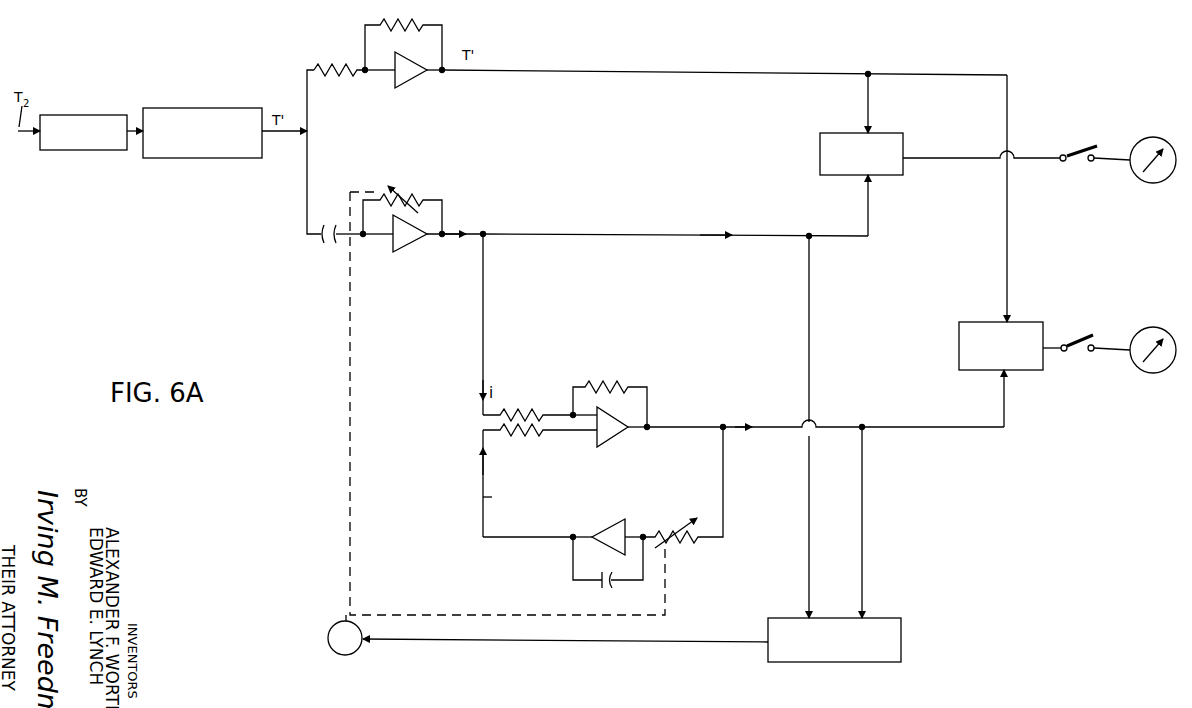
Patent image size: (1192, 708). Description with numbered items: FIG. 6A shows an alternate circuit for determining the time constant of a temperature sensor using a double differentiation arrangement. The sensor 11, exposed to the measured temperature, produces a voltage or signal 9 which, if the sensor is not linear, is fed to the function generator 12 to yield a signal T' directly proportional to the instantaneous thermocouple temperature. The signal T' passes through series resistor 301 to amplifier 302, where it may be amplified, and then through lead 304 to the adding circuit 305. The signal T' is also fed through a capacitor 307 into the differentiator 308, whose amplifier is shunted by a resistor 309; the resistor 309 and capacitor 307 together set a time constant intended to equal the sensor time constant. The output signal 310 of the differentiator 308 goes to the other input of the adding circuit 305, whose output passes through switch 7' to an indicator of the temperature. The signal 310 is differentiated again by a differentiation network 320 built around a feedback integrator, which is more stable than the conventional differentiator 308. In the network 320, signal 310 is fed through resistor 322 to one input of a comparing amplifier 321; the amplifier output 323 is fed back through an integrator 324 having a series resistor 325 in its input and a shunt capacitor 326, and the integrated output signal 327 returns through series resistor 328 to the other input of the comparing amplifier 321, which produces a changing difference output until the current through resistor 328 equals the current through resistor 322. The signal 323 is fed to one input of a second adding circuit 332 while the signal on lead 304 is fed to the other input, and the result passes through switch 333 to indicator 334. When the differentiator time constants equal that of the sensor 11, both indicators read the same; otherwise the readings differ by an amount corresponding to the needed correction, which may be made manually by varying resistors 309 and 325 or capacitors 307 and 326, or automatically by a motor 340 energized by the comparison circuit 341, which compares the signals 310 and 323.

The sensor 11 is at (85, 114).
The signal 9 is at (131, 128).
The function generator 12 is at (225, 108).
The series resistor 301 is at (340, 65).
The amplifier 302 is at (449, 110).
The lead 304 is at (670, 71).
The adding circuit 305 is at (903, 140).
The switch 7' is at (1078, 142).
The capacitor 307 is at (324, 223).
The differentiator 308 is at (405, 249).
The resistor 309 is at (411, 195).
The output signal 310 is at (596, 222).
The differentiation network 320 is at (603, 499).
The comparing amplifier 321 is at (628, 437).
The resistor 322 is at (528, 403).
The output 323 is at (707, 415).
The integrator 324 is at (627, 521).
The series resistor 325 is at (683, 502).
The capacitor 326 is at (613, 585).
The output integrated signal 327 is at (505, 509).
The series resistor 328 is at (528, 433).
The adding circuit 332 is at (1033, 322).
The switch 333 is at (1084, 352).
The indicator 334 is at (1155, 327).
The motor 340 is at (357, 653).
The comparison circuit 341 is at (901, 647).